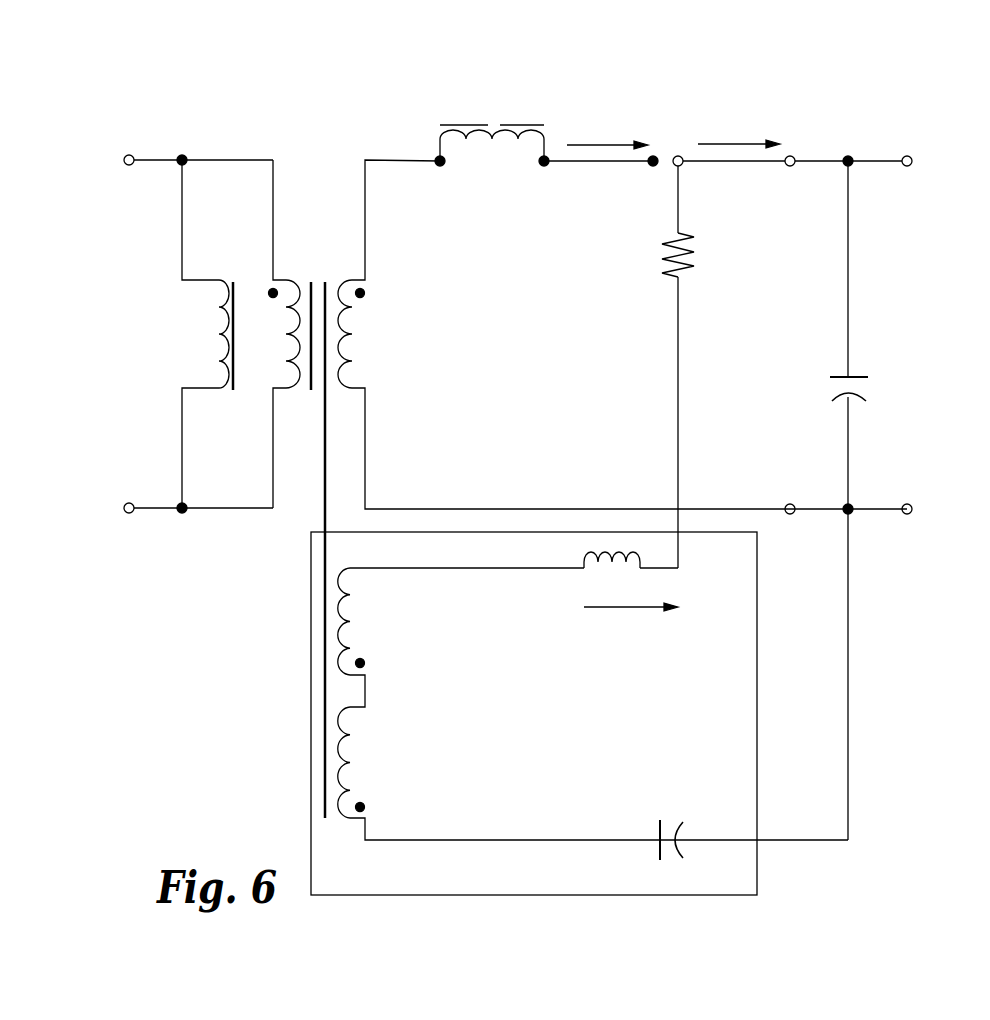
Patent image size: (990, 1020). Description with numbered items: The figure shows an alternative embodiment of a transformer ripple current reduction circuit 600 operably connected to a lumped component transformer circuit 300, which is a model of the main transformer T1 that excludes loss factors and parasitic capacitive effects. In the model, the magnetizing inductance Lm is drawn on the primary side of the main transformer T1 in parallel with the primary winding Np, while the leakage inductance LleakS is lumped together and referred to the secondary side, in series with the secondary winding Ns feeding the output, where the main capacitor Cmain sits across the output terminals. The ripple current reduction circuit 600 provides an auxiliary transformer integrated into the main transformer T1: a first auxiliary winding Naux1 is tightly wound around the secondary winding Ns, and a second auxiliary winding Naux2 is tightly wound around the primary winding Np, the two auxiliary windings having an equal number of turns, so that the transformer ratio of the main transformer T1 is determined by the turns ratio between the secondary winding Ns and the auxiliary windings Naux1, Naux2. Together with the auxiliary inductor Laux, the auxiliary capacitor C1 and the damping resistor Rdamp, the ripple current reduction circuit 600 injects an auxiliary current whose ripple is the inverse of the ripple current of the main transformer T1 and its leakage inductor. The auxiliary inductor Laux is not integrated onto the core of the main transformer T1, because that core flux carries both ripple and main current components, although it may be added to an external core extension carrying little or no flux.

The lumped component transformer circuit 300 is at (521, 454).
The transformer ripple current reduction circuit 600 is at (644, 715).
The main transformer T1 is at (312, 527).
The magnetizing inductance Lm is at (199, 334).
The primary winding Np is at (276, 334).
The secondary winding Ns is at (622, 334).
The leakage inductance LleakS is at (544, 129).
The damping resistor Rdamp is at (712, 367).
The main output capacitor Cmain is at (866, 503).
The first auxiliary winding Naux1 is at (461, 637).
The second auxiliary winding Naux2 is at (593, 773).
The auxiliary inductor Laux is at (631, 577).
The auxiliary capacitor C1 is at (658, 836).